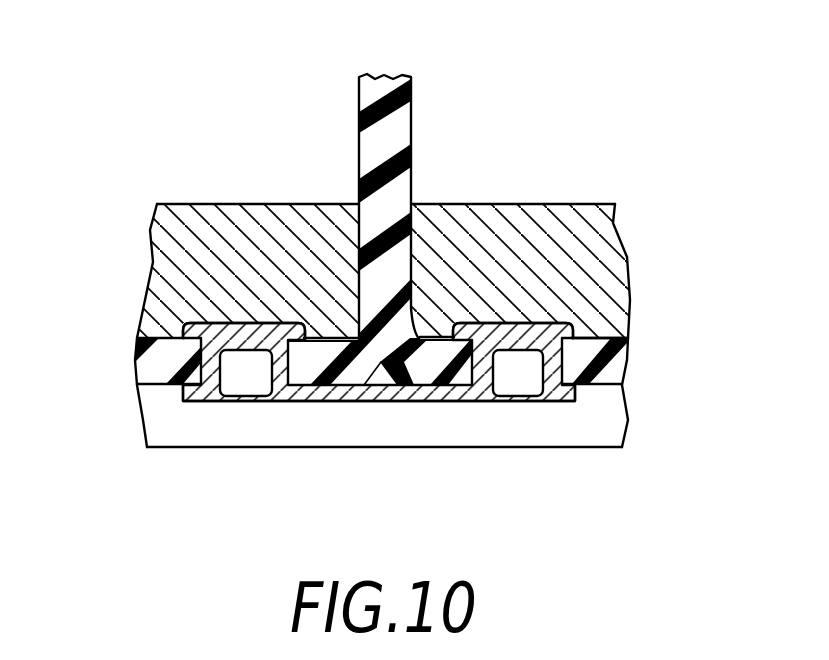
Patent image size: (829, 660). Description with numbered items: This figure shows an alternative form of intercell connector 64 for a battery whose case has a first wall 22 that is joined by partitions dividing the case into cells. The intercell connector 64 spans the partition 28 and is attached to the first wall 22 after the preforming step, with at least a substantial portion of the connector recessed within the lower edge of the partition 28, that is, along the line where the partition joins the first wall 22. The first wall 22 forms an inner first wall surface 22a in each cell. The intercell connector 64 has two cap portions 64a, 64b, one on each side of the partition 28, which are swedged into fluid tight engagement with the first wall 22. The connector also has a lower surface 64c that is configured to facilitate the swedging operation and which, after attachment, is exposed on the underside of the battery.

The first wall 22 is at (153, 373).
The inner first wall surface 22a is at (597, 337).
The partition 28 is at (402, 137).
The intercell connector 64 is at (470, 402).
The cap portion 64a is at (251, 322).
The cap portion 64b is at (528, 330).
The lower surface 64c is at (298, 401).